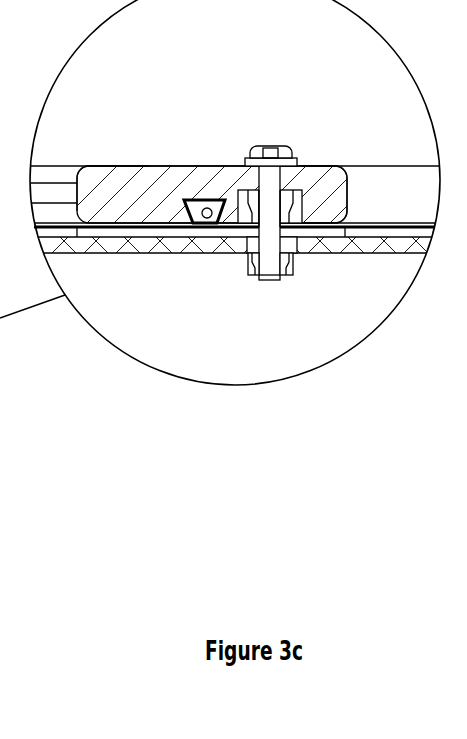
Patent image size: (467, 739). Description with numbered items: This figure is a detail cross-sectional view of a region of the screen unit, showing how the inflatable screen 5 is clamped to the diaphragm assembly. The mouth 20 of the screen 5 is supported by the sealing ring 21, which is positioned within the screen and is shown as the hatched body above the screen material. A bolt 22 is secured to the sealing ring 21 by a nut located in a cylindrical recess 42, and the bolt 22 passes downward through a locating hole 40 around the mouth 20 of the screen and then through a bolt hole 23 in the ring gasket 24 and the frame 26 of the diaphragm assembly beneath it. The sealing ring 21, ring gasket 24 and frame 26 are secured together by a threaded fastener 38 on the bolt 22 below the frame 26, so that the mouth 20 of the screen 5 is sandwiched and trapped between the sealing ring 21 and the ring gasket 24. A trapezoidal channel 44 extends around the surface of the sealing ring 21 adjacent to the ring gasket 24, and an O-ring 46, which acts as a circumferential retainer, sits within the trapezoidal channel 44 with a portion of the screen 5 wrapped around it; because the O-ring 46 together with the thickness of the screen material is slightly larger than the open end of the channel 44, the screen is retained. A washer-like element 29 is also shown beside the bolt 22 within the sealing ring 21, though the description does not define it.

The inflatable screen 5 is at (435, 227).
The mouth of the screen 20 is at (153, 213).
The sealing ring 21 is at (108, 170).
The bolt 22 is at (283, 155).
The bolt hole 23 is at (248, 235).
The ring gasket 24 is at (105, 233).
The frame 26 is at (165, 248).
The washer / bushing 29 is at (290, 210).
The threaded fastener 38 is at (285, 268).
The locating hole 40 is at (266, 222).
The cylindrical recess 42 is at (293, 220).
The trapezoidal channel 44 is at (197, 200).
The O-ring 46 is at (206, 220).